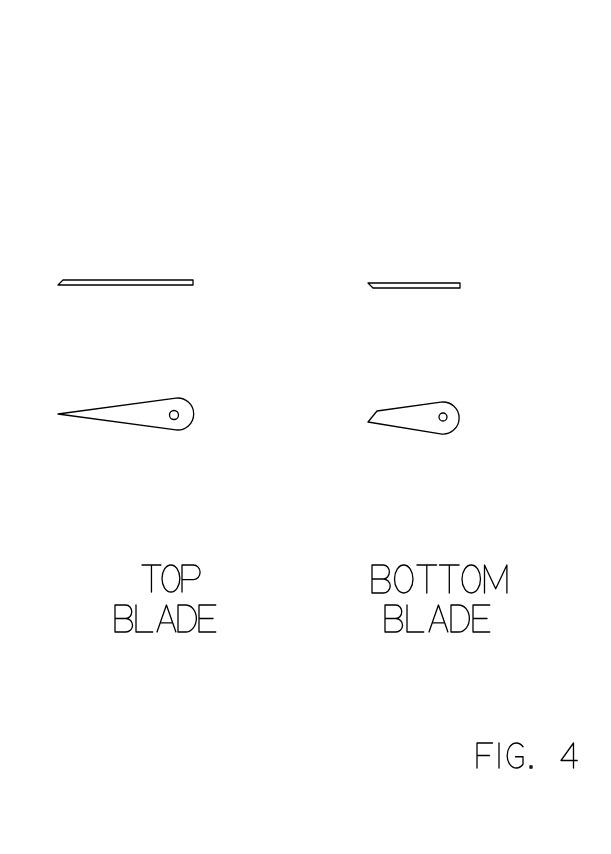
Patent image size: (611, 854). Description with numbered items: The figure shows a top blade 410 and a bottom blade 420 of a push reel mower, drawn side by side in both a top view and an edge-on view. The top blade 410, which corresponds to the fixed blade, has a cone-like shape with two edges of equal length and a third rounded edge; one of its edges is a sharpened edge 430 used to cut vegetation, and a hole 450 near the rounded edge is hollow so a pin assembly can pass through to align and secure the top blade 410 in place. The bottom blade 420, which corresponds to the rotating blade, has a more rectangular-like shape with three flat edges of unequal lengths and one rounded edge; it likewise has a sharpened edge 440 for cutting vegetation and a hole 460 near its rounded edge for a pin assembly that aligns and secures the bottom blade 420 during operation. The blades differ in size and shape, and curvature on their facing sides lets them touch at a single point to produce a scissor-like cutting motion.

The top blade 410 is at (150, 142).
The bottom blade 420 is at (448, 142).
The sharpened edge 430 is at (120, 380).
The sharpened edge 440 is at (391, 455).
The hole 450 is at (219, 353).
The hole 460 is at (486, 356).